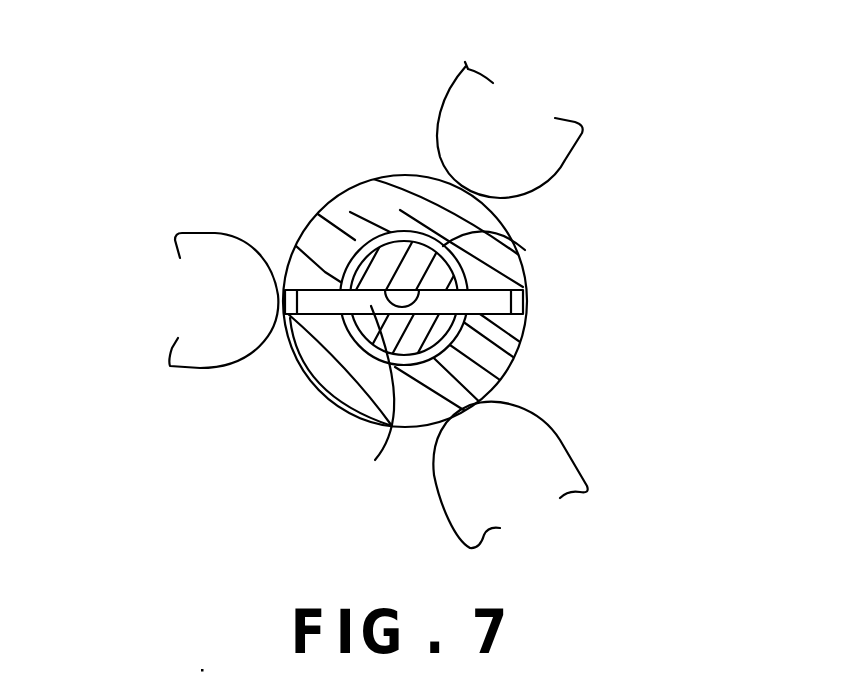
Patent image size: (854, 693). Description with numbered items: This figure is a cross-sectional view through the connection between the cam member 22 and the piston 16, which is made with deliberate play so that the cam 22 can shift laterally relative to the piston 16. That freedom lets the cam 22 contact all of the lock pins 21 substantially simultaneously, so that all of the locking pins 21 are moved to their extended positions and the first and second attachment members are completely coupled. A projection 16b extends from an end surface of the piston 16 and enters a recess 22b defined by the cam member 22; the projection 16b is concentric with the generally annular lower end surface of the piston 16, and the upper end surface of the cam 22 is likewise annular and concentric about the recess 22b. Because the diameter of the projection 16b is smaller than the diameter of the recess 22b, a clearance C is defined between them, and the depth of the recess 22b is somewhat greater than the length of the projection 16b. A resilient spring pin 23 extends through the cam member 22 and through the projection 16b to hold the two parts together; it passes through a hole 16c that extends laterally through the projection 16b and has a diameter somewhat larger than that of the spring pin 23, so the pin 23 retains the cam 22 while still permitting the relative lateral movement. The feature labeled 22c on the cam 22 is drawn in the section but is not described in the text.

The piston 16 is at (347, 288).
The projection 16b is at (373, 278).
The hole 16c is at (385, 288).
The lock pin 21 is at (467, 115).
The cam member 22 is at (343, 383).
The recess 22b is at (505, 232).
The sleeve slot 22c is at (285, 302).
The resilient spring pin 23 is at (373, 399).
The clearance C is at (498, 372).